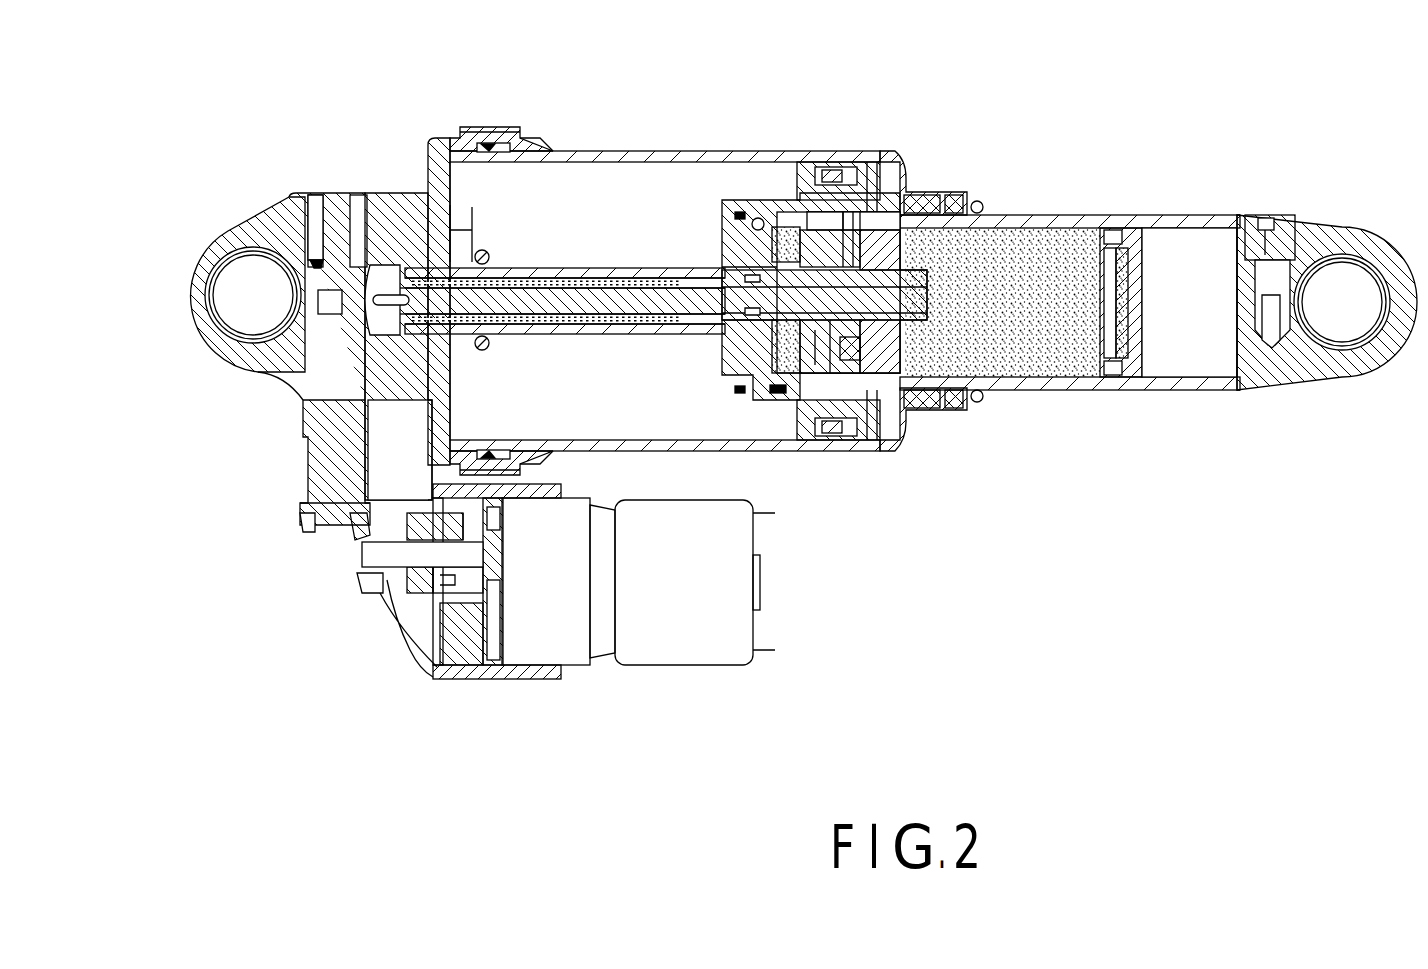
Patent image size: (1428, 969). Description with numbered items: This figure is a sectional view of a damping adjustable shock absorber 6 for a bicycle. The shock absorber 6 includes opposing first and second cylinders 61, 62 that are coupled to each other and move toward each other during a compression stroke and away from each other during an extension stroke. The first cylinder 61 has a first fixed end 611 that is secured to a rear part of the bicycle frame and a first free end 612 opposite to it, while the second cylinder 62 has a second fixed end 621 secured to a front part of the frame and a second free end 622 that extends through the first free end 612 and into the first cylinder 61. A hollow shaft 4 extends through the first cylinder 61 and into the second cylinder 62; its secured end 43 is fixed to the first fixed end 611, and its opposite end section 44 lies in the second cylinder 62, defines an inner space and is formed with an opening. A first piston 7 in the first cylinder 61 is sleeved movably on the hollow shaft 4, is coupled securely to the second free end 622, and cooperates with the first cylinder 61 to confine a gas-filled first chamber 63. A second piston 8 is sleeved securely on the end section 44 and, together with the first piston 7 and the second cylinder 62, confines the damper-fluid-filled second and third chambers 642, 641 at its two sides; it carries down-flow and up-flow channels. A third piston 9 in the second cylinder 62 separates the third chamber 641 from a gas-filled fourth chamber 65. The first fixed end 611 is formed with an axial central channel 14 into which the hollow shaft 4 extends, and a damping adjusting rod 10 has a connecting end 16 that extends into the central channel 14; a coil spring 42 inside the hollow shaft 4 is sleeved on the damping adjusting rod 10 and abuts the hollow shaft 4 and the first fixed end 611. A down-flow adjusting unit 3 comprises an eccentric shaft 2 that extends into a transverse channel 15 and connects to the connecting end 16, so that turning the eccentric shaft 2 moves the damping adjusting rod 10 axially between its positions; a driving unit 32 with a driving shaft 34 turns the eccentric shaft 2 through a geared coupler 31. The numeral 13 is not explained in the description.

The eccentric shaft 2 is at (305, 455).
The down-flow adjusting unit 3 is at (477, 688).
The geared coupler 31 is at (362, 575).
The driving unit 32 is at (690, 655).
The driving shaft 34 is at (400, 557).
The hollow shaft 4 is at (575, 258).
The coil spring 42 is at (600, 276).
The secured end 43 is at (475, 343).
The end section 44 is at (835, 400).
The shock absorber 6 is at (620, 149).
The first cylinder 61 is at (562, 149).
The first fixed end 611 is at (205, 250).
The first free end 612 is at (888, 418).
The second cylinder 62 is at (1036, 216).
The second fixed end 621 is at (1340, 235).
The second free end 622 is at (882, 168).
The first chamber 63 is at (782, 424).
The third chamber 641 is at (1062, 365).
The second chamber 642 is at (740, 357).
The fourth chamber 65 is at (1194, 357).
The first piston 7 is at (760, 197).
The second piston 8 is at (910, 226).
The third piston 9 is at (1150, 236).
The damping adjusting rod 10 is at (700, 268).
The screw 13 is at (455, 260).
The central channel 14 is at (410, 258).
The transverse channel 15 is at (300, 345).
The connecting end 16 is at (390, 300).